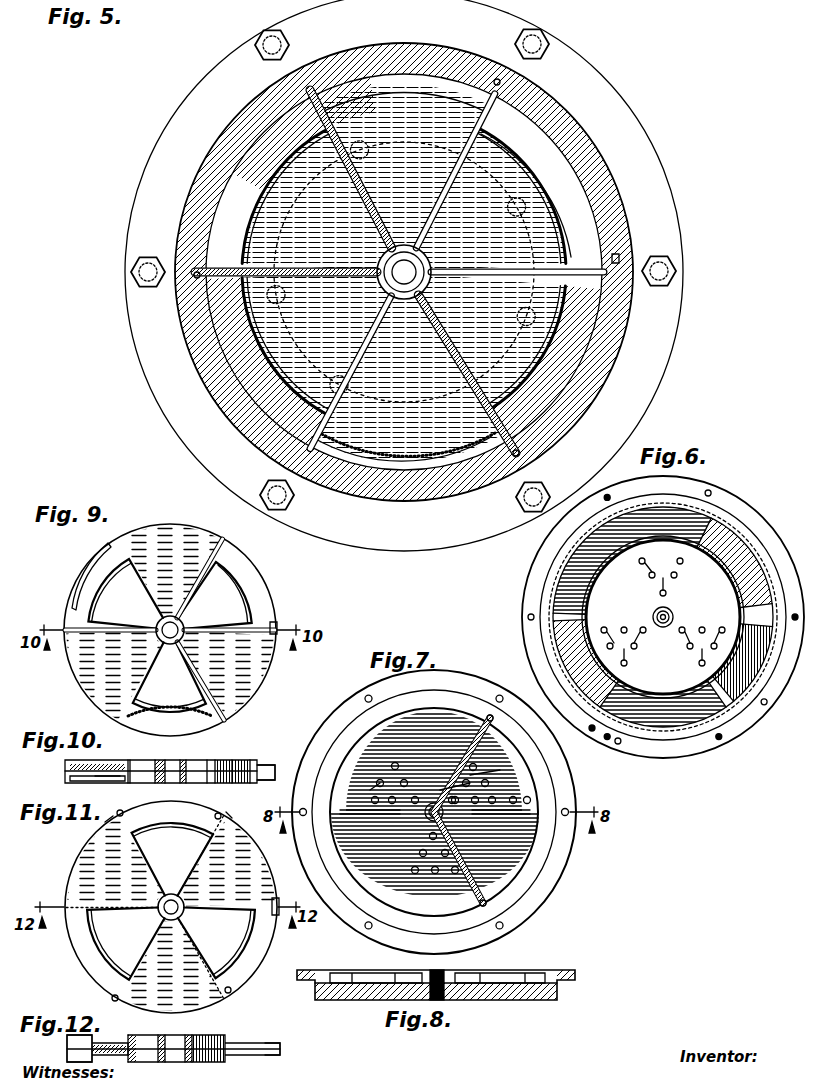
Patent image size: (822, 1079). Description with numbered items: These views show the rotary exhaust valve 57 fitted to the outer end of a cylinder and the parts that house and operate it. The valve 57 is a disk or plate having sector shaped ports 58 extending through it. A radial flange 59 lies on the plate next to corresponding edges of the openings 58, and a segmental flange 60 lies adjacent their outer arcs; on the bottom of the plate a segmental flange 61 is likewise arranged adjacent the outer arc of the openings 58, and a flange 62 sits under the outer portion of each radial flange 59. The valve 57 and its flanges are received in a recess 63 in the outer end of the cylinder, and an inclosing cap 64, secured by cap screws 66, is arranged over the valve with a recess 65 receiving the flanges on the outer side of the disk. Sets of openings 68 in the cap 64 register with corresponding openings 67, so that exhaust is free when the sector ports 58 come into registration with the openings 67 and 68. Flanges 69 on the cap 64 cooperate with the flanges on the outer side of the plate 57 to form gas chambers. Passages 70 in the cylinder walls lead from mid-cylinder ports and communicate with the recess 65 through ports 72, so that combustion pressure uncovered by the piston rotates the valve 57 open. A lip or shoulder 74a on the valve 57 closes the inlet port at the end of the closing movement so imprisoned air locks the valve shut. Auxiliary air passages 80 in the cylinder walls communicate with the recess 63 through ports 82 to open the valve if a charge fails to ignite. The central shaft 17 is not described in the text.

In FIG. 5, the shaft 17 is at (152, 420).
In FIG. 5, the rotary exhaust valve 57 is at (600, 165).
In FIG. 9, the rotary exhaust valve 57 is at (262, 594).
In FIG. 10, the rotary exhaust valve 57 is at (65, 771).
In FIG. 11, the rotary exhaust valve 57 is at (90, 858).
In FIG. 12, the rotary exhaust valve 57 is at (240, 1062).
In FIG. 5, the sector shaped ports 58 is at (262, 205).
In FIG. 9, the sector shaped ports 58 is at (169, 635).
In FIG. 11, the sector shaped ports 58 is at (171, 901).
In FIG. 5, the radial flange 59 is at (235, 267).
In FIG. 9, the radial flange 59 is at (200, 582).
In FIG. 10, the radial flange 59 is at (132, 762).
In FIG. 11, the radial flange 59 is at (144, 929).
In FIG. 12, the radial flange 59 is at (118, 1048).
In FIG. 5, the segmental flange 60 is at (205, 233).
In FIG. 9, the segmental flange 60 is at (100, 582).
In FIG. 10, the segmental flange 60 is at (240, 765).
In FIG. 5, the segmental flange 61 is at (420, 360).
In FIG. 10, the segmental flange 61 is at (108, 784).
In FIG. 11, the segmental flange 61 is at (170, 826).
In FIG. 7, the segmental flange 61 is at (330, 828).
In FIG. 5, the flange 62 is at (332, 268).
In FIG. 10, the flange 62 is at (70, 784).
In FIG. 11, the flange 62 is at (218, 813).
In FIG. 12, the flange 62 is at (67, 1049).
In FIG. 6, the recess 63 is at (742, 543).
In FIG. 5, the inclosing cap 64 is at (370, 553).
In FIG. 6, the inclosing cap 64 is at (745, 716).
In FIG. 7, the inclosing cap 64 is at (560, 850).
In FIG. 8, the inclosing cap 64 is at (560, 987).
In FIG. 7, the recess 65 is at (528, 856).
In FIG. 8, the recess 65 is at (538, 975).
In FIG. 5, the cap screws 66 is at (258, 40).
In FIG. 6, the cap screws 66 is at (608, 740).
In FIG. 5, the openings 67 is at (362, 158).
In FIG. 6, the openings 67 is at (663, 609).
In FIG. 6, the ports or openings 68 is at (592, 731).
In FIG. 7, the ports or openings 68 is at (372, 783).
In FIG. 7, the flanges 69 is at (490, 714).
In FIG. 8, the flanges 69 is at (360, 973).
In FIG. 6, the passages 70 is at (714, 496).
In FIG. 5, the ports 72 is at (508, 80).
In FIG. 5, the lip or shoulder 74a is at (619, 258).
In FIG. 9, the lip or shoulder 74a is at (140, 530).
In FIG. 10, the lip or shoulder 74a is at (273, 786).
In FIG. 11, the lip or shoulder 74a is at (104, 827).
In FIG. 12, the lip or shoulder 74a is at (280, 1043).
In FIG. 6, the auxiliary air passages 80 is at (590, 610).
In FIG. 6, the ports 82 is at (720, 528).